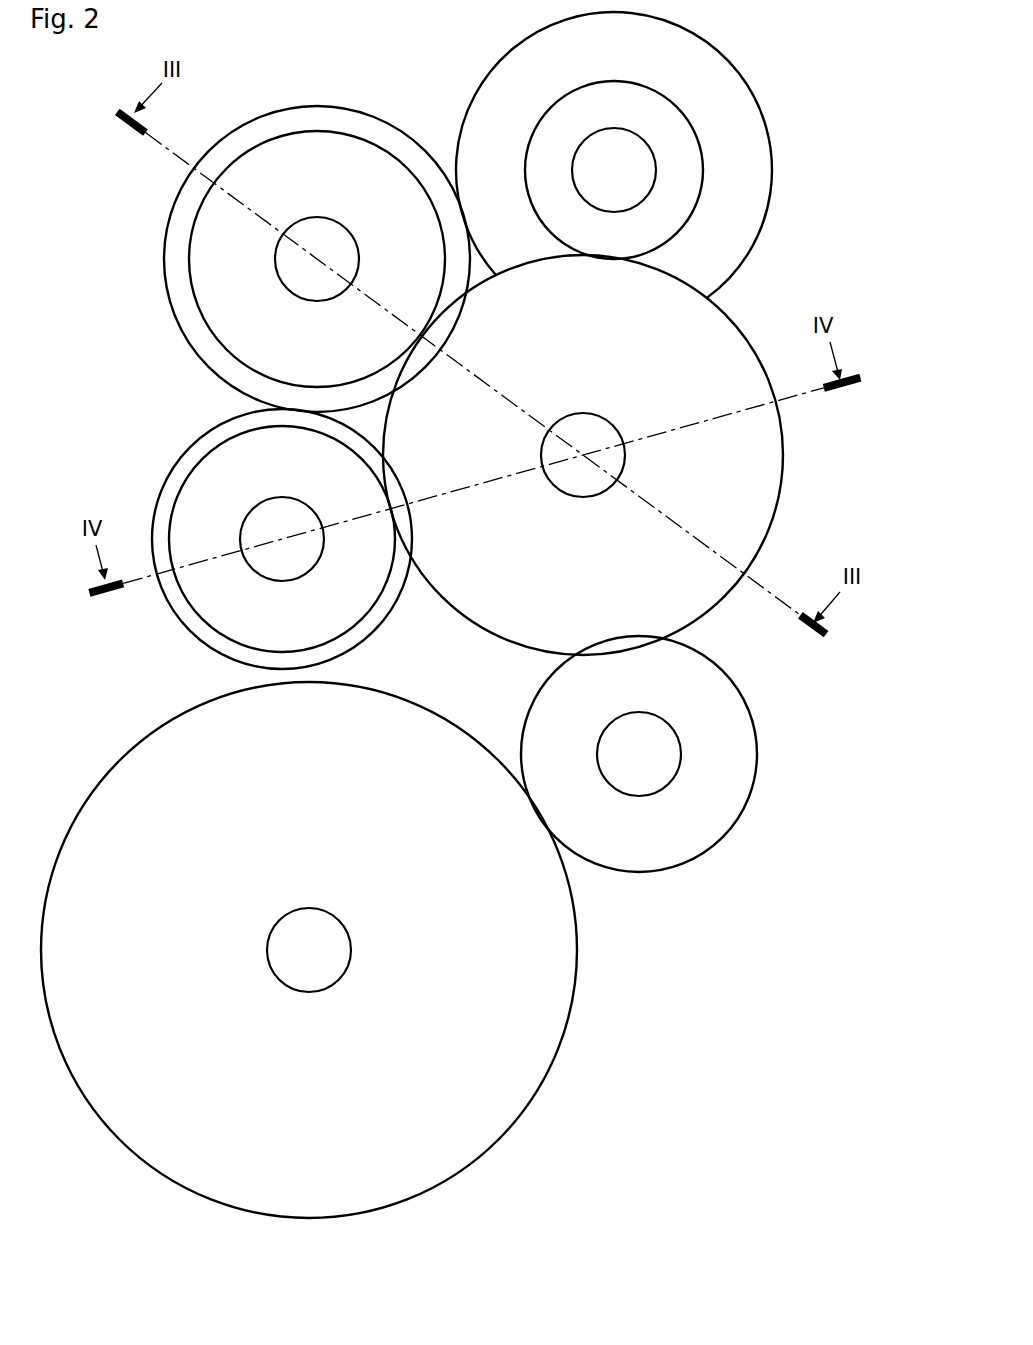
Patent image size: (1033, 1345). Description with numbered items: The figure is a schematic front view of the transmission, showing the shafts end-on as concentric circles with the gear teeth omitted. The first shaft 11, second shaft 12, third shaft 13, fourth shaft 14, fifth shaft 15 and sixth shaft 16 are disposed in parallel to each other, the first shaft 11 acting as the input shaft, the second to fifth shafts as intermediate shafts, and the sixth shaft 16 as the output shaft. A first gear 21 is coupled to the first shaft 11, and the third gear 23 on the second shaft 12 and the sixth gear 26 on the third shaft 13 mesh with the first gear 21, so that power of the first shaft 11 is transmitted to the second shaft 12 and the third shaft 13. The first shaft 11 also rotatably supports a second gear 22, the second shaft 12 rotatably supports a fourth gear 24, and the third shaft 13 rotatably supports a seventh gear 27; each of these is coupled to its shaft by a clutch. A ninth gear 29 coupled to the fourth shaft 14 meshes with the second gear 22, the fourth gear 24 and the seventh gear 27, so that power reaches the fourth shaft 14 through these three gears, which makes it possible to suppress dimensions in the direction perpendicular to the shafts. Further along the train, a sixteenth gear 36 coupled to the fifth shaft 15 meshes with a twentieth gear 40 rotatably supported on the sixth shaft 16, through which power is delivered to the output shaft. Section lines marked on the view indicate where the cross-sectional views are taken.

The first shaft 11 is at (330, 237).
The second shaft 12 is at (622, 142).
The third shaft 13 is at (288, 512).
The fourth shaft 14 is at (590, 428).
The fifth shaft 15 is at (652, 740).
The sixth shaft 16 is at (317, 922).
The first gear 21 is at (192, 318).
The second gear 22 is at (340, 150).
The third gear 23 is at (725, 97).
The fourth gear 24 is at (683, 172).
The sixth gear 26 is at (193, 457).
The seventh gear 27 is at (227, 603).
The ninth gear 29 is at (707, 328).
The sixteenth gear 36 is at (695, 828).
The twentieth gear 40 is at (540, 983).